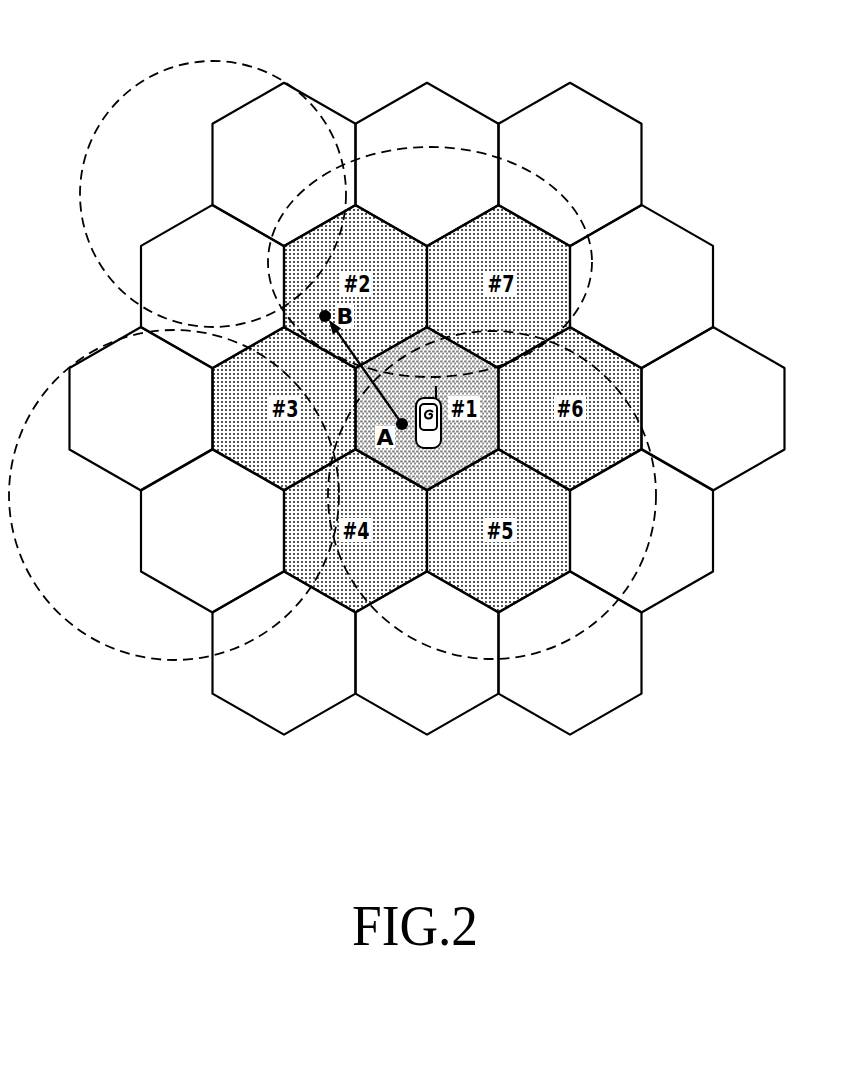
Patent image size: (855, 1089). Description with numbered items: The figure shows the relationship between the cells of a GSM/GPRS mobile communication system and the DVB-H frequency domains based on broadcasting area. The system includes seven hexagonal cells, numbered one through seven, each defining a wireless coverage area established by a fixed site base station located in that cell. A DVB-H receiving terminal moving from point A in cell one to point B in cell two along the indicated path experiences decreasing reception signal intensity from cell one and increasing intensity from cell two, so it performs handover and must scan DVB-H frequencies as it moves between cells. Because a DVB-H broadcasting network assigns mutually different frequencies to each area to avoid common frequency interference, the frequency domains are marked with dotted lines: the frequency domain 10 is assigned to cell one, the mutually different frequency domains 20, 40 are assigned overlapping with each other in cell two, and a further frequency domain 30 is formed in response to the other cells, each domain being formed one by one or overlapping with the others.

The frequency domain 10 is at (660, 540).
The frequency domain 20 is at (230, 59).
The frequency domain 30 is at (147, 657).
The frequency domain 40 is at (430, 148).